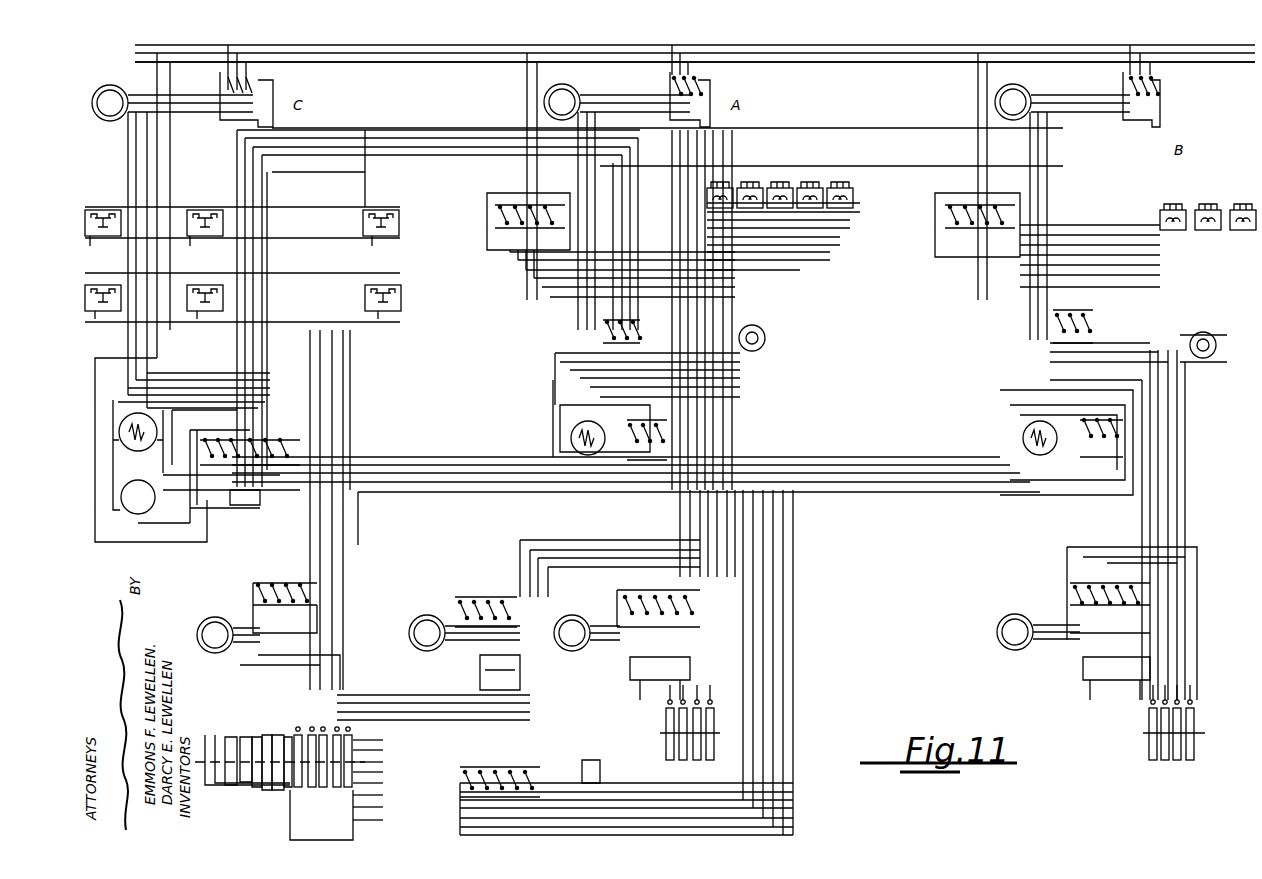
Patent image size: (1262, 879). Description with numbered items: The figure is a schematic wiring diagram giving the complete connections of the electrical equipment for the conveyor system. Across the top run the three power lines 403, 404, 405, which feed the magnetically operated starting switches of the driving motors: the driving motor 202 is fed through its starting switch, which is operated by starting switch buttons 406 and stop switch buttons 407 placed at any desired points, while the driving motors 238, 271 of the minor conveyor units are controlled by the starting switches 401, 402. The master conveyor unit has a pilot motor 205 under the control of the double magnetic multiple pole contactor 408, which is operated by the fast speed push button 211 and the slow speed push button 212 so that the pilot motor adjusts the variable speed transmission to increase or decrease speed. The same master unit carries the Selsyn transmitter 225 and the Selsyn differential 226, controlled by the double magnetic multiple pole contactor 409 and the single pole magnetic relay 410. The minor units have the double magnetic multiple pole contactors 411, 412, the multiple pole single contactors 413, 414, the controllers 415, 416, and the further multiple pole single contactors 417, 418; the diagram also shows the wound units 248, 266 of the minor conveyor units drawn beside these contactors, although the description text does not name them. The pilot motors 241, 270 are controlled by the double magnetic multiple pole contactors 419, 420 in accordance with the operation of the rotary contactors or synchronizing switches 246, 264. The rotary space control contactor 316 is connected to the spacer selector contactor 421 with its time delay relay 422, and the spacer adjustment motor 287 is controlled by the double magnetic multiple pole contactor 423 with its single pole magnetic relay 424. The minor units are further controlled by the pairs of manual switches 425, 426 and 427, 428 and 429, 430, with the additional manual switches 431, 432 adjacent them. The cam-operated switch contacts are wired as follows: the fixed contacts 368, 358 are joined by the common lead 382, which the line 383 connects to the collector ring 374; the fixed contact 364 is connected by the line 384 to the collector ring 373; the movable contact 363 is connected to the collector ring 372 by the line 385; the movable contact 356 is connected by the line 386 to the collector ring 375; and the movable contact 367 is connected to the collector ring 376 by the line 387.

The driving motor 202 is at (103, 117).
The power line 403 is at (355, 62).
The power line 404 is at (423, 72).
The power line 405 is at (497, 57).
The driving motor 238 is at (575, 88).
The starting switch 401 is at (705, 85).
The driving motor 271 is at (1022, 88).
The starting switch 402 is at (1160, 88).
The stop switch button 407 is at (398, 200).
The starting switch button 406 is at (403, 240).
The fast speed push button 211 is at (390, 283).
The slow speed push button 212 is at (400, 323).
The double magnetic multiple pole contactor 411 is at (488, 210).
The manual switch 425 is at (715, 180).
The manual switch 427 is at (745, 180).
The manual switch 429 is at (778, 180).
The manual switch 431 is at (810, 180).
The manual switch 432 is at (845, 180).
The double magnetic multiple pole contactor 412 is at (935, 215).
The manual switch 426 is at (1165, 202).
The manual switch 428 is at (1208, 202).
The manual switch 430 is at (1240, 202).
The multiple pole single contactor 413 is at (652, 312).
The controller 415 is at (765, 338).
The multiple pole single contactor 414 is at (1090, 325).
The controller 416 is at (1203, 358).
The heater 248 is at (570, 438).
The multiple pole single contactor 417 is at (660, 430).
The heater 266 is at (1035, 455).
The multiple pole single contactor 418 is at (1115, 460).
The Selsyn transmitter 225 is at (138, 451).
The Selsyn differential 226 is at (130, 513).
The double magnetic multiple pole contactor 409 is at (245, 500).
The single pole magnetic relay 410 is at (235, 505).
The double magnetic multiple pole contactor 408 is at (245, 590).
The pilot motor 205 is at (210, 653).
The double magnetic multiple pole contactor 423 is at (445, 605).
The motor 287 is at (425, 652).
The single pole magnetic relay 424 is at (480, 685).
The pilot motor 241 is at (570, 652).
The double magnetic multiple pole contactor 419 is at (695, 610).
The rotary contactor 246 is at (666, 722).
The pilot motor 270 is at (1012, 650).
The double magnetic multiple pole contactor 420 is at (1162, 591).
The rotary contactor 264 is at (1149, 722).
The spacer selector 421 is at (462, 770).
The time delay relay 422 is at (600, 750).
The common lead 382 is at (278, 733).
The movable contact 367 is at (257, 735).
The fixed contact 368 is at (267, 733).
The fixed contact 358 is at (288, 735).
The rotary space control contactor 316 is at (357, 687).
The fixed contact 364 is at (245, 735).
The movable contact 363 is at (235, 738).
The collector ring 372 is at (375, 736).
The collector ring 373 is at (375, 750).
The collector ring 374 is at (375, 764).
The collector ring 375 is at (375, 777).
The collector ring 376 is at (375, 790).
The line 387 is at (375, 802).
The line 386 is at (375, 814).
The line 383 is at (375, 827).
The line 385 is at (208, 805).
The line 384 is at (233, 810).
The movable contact 356 is at (273, 812).